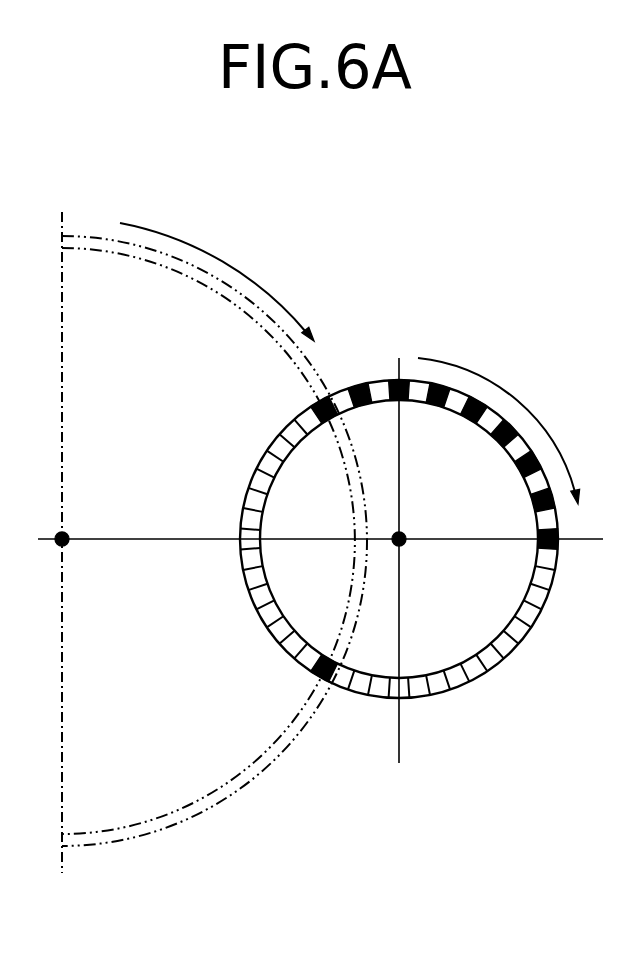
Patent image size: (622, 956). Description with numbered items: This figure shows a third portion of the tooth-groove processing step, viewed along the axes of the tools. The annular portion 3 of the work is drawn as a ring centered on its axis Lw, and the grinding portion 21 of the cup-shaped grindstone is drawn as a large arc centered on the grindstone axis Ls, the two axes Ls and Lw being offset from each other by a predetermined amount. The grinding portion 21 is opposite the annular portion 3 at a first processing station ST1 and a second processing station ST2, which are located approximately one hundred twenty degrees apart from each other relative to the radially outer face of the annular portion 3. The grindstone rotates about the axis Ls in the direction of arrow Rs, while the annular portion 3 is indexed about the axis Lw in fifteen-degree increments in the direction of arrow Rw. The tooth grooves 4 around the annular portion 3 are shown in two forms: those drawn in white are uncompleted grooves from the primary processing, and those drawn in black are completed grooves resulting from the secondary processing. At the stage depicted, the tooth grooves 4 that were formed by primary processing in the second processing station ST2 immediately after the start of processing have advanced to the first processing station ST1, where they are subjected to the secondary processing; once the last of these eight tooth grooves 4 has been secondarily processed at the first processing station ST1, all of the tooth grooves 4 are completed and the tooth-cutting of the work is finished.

The annular portion 3 is at (417, 690).
The tooth grooves 4 is at (380, 509).
The grinding portion 21 is at (175, 820).
The axis of the cup-shaped grindstone Ls is at (70, 537).
The axis of the annular portion Lw is at (408, 538).
The rotation direction of the grindstone Rs is at (217, 279).
The indexing direction of the work Rw is at (504, 431).
The first processing station ST1 is at (298, 672).
The second processing station ST2 is at (302, 400).